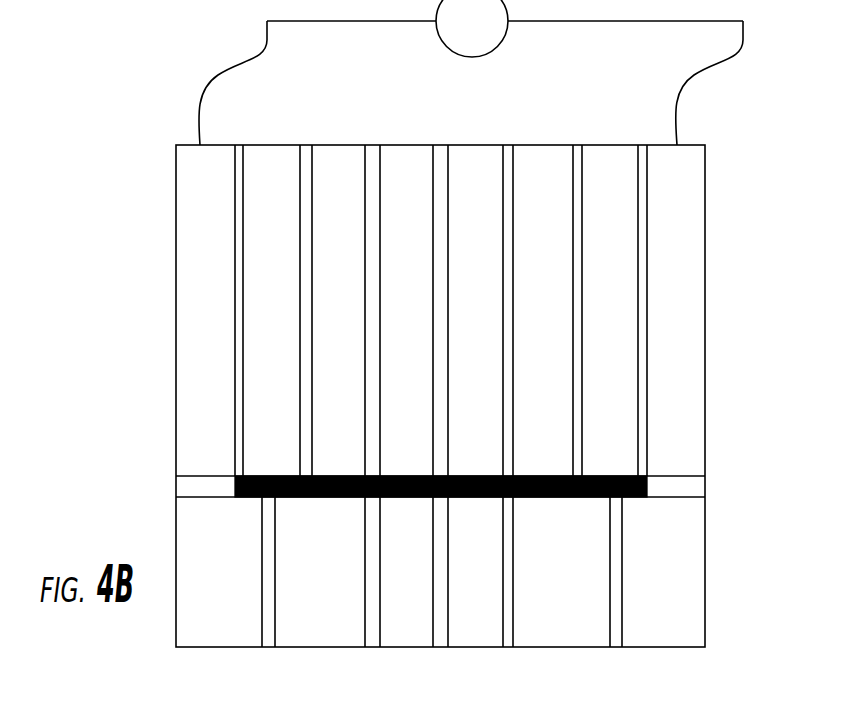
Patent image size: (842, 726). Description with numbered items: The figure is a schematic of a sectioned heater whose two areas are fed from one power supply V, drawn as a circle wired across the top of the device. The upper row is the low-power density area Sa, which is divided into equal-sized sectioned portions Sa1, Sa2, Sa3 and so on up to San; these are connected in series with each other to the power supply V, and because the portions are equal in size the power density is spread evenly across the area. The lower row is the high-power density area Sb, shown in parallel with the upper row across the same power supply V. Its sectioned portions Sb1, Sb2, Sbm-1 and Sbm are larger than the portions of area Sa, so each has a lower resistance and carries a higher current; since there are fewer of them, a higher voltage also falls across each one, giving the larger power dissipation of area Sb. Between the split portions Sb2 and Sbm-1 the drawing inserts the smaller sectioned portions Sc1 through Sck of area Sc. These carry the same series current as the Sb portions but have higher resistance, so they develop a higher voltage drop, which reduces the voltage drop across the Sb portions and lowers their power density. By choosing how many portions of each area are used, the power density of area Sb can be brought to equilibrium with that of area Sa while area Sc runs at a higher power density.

The voltmeter V is at (471, 72).
The sectioned portion Sa1 is at (204, 293).
The sectioned portion Sa2 is at (272, 293).
The sectioned portion Sa3 is at (337, 293).
The sectioned portion San is at (677, 293).
The sectioned portion Sb1 is at (218, 573).
The sectioned portion Sb2 is at (320, 573).
The sectioned portion Sc1 is at (405, 573).
The sectioned portion Sck is at (476, 573).
The sectioned portion Sbm-1 is at (560, 573).
The sectioned portion Sbm is at (662, 573).